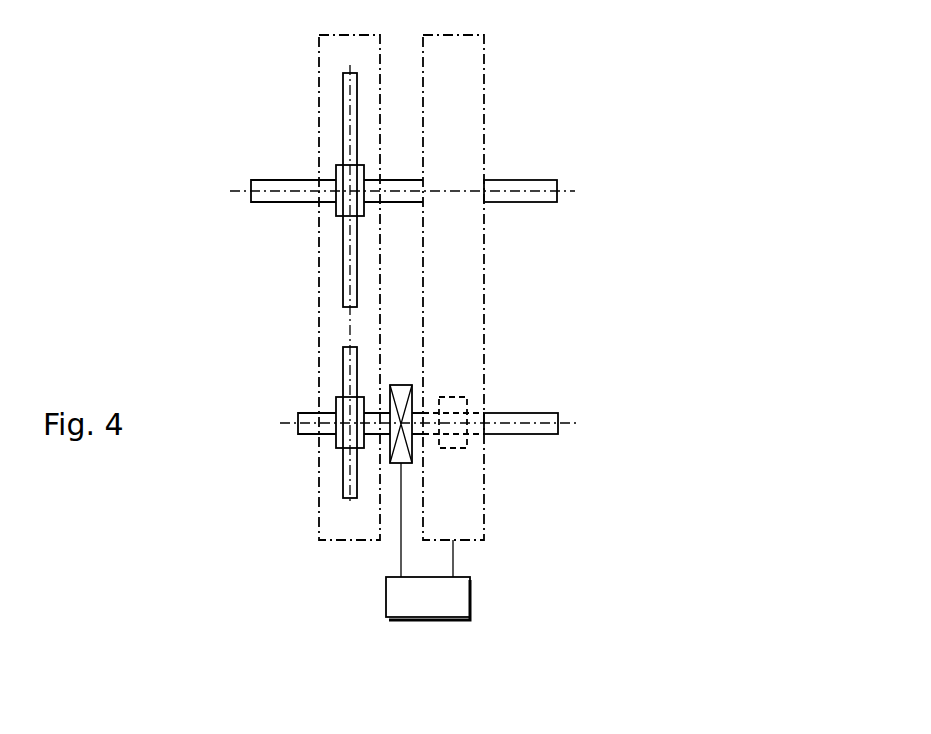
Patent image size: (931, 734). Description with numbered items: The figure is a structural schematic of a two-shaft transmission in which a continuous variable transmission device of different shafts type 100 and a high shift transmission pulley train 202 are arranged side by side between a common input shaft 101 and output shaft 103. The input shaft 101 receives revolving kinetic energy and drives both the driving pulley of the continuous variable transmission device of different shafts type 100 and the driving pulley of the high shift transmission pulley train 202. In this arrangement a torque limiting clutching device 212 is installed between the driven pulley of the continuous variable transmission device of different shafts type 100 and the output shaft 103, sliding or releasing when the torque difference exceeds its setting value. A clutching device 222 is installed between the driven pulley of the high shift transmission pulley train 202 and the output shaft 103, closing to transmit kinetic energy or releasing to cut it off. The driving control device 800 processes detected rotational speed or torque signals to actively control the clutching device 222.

The continuous variable transmission device of different shafts type 100 is at (487, 275).
The input shaft 101 is at (515, 178).
The output shaft 103 is at (515, 413).
The high shift transmission pulley train 202 is at (318, 290).
The torque limiting clutching device 212 is at (450, 397).
The clutching device 222 is at (401, 385).
The driving control device 800 is at (391, 605).